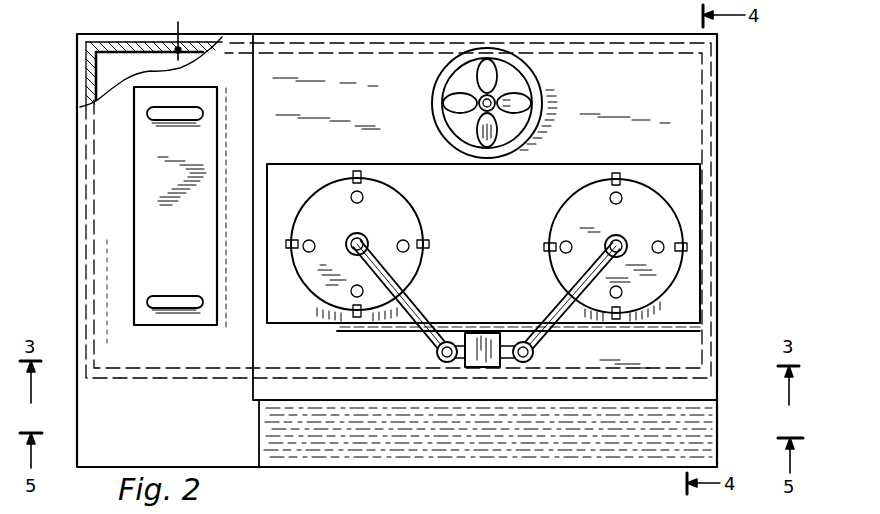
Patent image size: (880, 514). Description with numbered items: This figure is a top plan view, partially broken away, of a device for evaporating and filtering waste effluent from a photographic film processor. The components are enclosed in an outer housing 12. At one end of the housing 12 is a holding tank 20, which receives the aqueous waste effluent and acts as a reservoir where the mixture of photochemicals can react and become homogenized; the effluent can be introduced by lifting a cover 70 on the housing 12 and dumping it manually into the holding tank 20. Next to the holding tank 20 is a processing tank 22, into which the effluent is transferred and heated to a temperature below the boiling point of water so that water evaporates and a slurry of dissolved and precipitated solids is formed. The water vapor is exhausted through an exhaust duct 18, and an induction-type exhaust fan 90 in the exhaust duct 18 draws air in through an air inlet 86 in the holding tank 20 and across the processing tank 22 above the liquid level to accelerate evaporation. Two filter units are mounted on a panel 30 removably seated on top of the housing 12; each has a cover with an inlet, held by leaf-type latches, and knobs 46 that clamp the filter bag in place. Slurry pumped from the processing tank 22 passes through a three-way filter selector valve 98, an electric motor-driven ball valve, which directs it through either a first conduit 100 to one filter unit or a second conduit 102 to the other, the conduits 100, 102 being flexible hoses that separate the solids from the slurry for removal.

The outer housing 12 is at (604, 40).
The exhaust duct 18 is at (545, 103).
The holding tank 20 is at (110, 66).
The processing tank 22 is at (365, 66).
The panel 30 is at (676, 188).
The knobs 46 is at (313, 243).
The cover 70 is at (142, 184).
The air inlet 86 is at (150, 47).
The exhaust fan 90 is at (470, 104).
The filter selector valve 98 is at (488, 356).
The first conduit 100 is at (406, 303).
The second conduit 102 is at (570, 306).